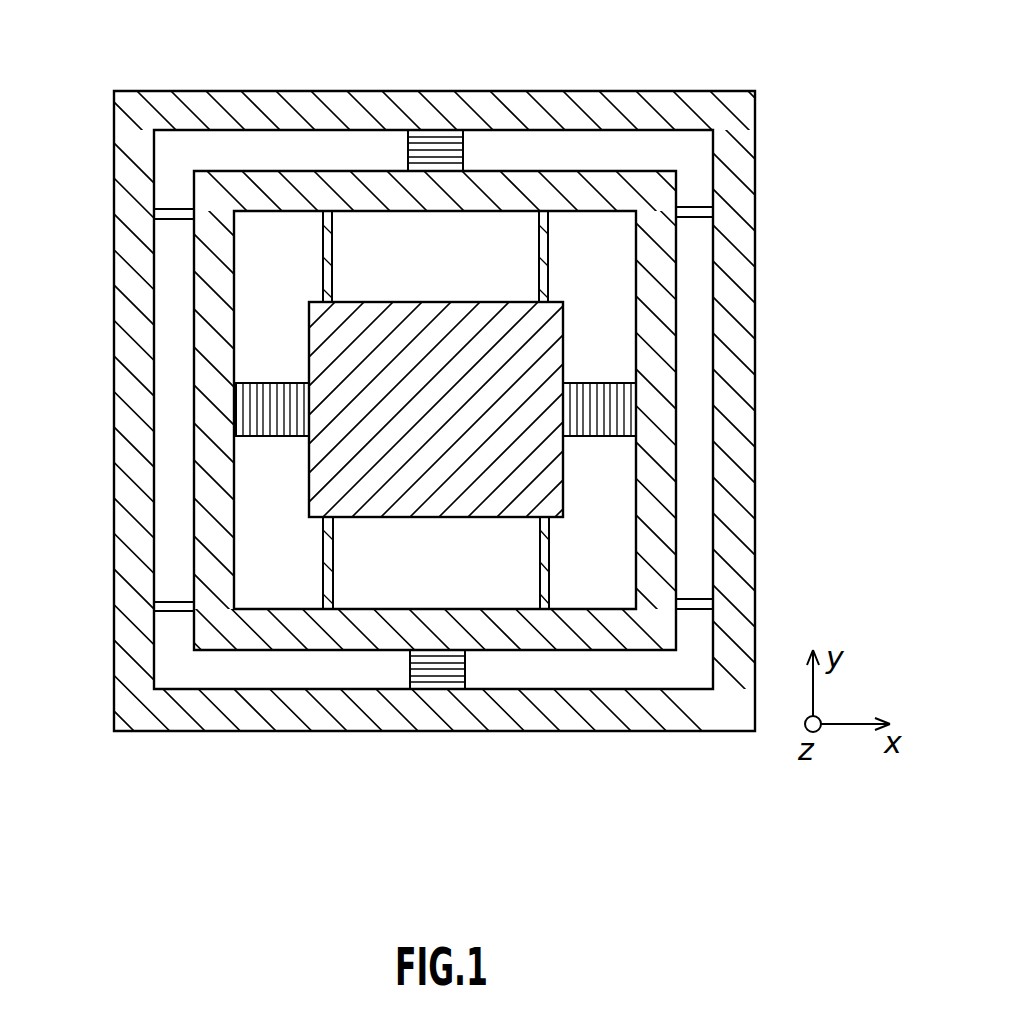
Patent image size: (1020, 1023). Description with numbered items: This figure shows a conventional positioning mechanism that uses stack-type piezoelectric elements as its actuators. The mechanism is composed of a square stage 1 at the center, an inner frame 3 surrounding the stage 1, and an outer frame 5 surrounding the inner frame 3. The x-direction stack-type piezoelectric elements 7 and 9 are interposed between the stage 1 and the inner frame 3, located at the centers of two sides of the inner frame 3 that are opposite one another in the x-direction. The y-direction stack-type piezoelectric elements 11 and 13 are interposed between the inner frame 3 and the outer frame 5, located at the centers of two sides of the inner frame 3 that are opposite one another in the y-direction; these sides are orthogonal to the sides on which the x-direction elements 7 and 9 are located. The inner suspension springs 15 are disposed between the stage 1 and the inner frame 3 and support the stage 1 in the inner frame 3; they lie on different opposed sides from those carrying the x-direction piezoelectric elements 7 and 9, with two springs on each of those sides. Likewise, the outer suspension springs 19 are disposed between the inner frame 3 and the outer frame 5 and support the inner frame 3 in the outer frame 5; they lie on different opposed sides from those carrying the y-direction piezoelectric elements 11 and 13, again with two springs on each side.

The square stage 1 is at (527, 331).
The inner frame 3 is at (213, 277).
The outer frame 5 is at (737, 158).
The x-direction stack-type piezoelectric element 7 is at (253, 418).
The x-direction stack-type piezoelectric element 9 is at (617, 408).
The y-direction stack-type piezoelectric element 11 is at (438, 668).
The y-direction stack-type piezoelectric element 13 is at (443, 135).
The inner suspension springs 15 is at (335, 258).
The outer suspension springs 19 is at (173, 215).